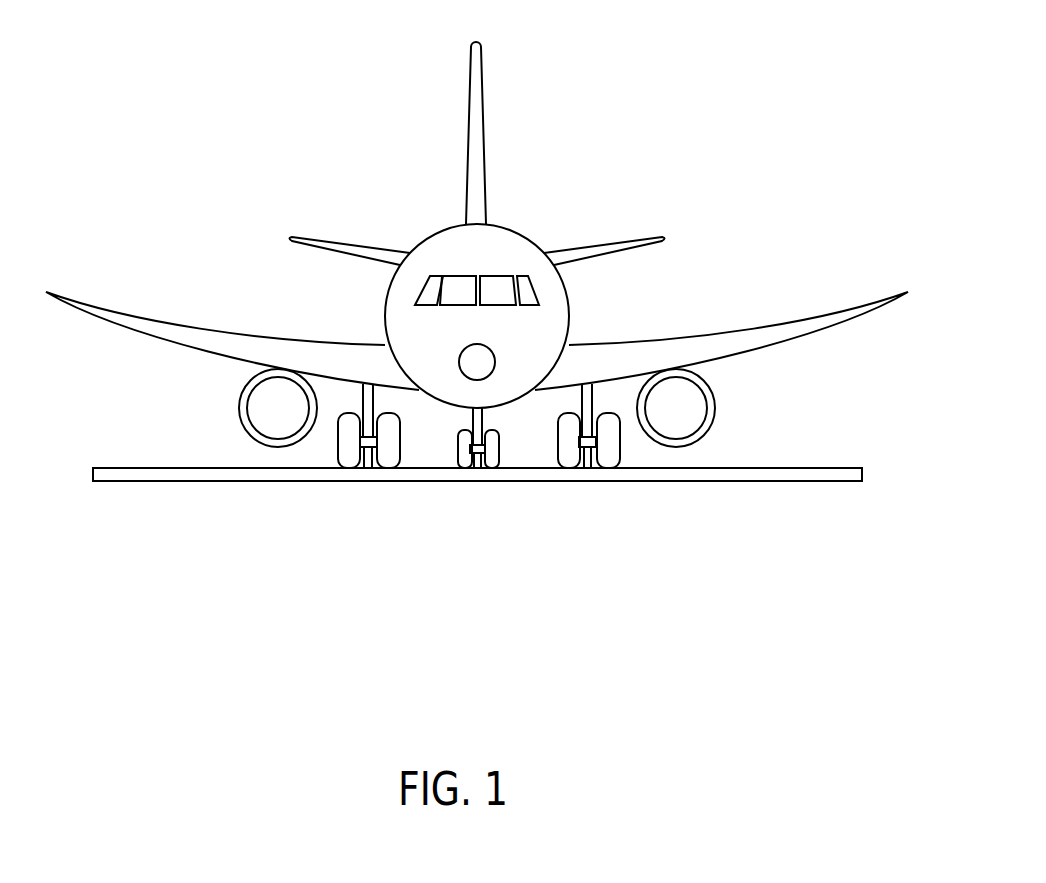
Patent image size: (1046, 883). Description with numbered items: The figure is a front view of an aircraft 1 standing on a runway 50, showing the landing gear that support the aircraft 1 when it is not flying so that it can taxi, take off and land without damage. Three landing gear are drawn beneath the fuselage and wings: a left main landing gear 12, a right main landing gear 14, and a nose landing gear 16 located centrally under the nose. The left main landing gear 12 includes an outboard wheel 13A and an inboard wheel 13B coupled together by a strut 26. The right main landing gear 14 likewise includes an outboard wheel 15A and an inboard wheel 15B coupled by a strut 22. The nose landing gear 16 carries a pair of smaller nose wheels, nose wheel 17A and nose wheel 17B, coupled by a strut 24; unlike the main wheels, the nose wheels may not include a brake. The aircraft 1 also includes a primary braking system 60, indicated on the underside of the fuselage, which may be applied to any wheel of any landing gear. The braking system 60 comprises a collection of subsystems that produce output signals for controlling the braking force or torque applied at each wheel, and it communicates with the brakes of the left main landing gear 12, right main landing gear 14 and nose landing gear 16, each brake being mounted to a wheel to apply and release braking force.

The aircraft 1 is at (477, 308).
The left main landing gear 12 is at (670, 415).
The outboard wheel 13A is at (620, 456).
The inboard wheel 13B is at (572, 413).
The right main landing gear 14 is at (285, 491).
The outboard wheel 15A is at (340, 457).
The inboard wheel 15B is at (400, 458).
The nose landing gear 16 is at (524, 439).
The nose wheel 17A is at (500, 457).
The nose wheel 17B is at (460, 458).
The strut 22 is at (364, 457).
The strut 24 is at (476, 458).
The strut 26 is at (585, 458).
The runway 50 is at (812, 477).
The primary braking system 60 is at (432, 402).